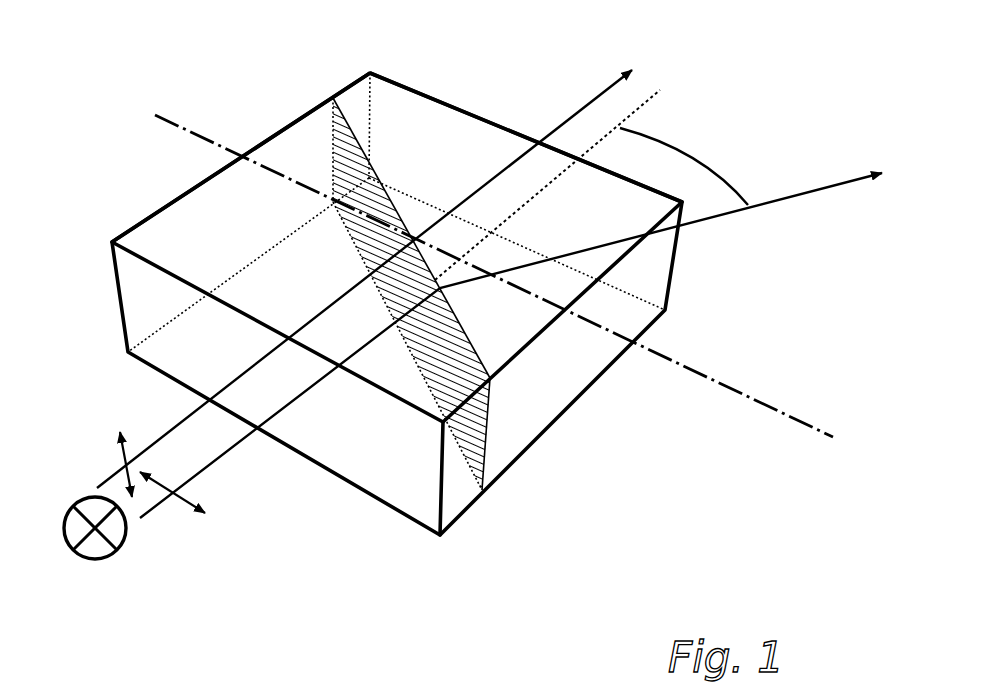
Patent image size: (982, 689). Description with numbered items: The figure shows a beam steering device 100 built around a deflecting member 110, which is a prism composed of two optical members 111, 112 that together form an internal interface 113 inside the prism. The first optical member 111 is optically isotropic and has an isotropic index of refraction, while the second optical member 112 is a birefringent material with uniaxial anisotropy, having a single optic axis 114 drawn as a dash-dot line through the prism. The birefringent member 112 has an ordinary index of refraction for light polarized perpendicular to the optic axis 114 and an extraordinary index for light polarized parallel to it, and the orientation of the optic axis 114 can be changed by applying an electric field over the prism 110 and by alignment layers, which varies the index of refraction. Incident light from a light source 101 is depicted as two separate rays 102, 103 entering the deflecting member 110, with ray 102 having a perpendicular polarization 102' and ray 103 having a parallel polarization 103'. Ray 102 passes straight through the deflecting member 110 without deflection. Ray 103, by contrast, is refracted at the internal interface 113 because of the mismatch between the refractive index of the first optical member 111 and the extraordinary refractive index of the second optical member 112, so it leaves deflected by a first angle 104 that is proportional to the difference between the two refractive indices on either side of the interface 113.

The beam steering device 100 is at (361, 313).
The light source 101 is at (127, 535).
The ray 102 is at (353, 279).
The perpendicular polarization 102' is at (122, 449).
The ray 103 is at (511, 304).
The parallel polarization 103' is at (201, 505).
The first angle 104 is at (692, 157).
The deflecting member 110 is at (117, 292).
The first optical member 111 is at (275, 145).
The second optical member 112 is at (359, 93).
The internal interface 113 is at (467, 442).
The optic axis 114 is at (722, 382).